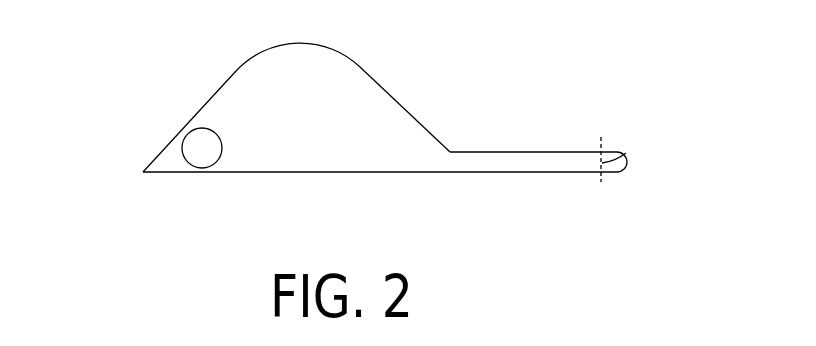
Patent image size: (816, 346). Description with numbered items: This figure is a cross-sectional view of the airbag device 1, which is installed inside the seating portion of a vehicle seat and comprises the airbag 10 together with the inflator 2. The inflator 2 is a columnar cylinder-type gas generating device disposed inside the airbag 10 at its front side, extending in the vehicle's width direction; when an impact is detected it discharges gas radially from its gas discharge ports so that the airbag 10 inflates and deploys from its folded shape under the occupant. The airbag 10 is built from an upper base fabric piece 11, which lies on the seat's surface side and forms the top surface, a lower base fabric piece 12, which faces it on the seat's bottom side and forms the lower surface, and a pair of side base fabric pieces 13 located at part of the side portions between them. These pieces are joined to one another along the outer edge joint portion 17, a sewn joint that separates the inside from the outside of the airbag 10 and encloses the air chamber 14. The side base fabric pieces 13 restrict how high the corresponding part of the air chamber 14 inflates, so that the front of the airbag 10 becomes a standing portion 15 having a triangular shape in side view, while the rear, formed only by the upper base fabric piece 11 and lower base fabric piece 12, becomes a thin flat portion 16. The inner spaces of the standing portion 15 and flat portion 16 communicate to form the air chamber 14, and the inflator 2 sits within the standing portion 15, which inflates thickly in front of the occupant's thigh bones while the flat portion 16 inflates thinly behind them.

The airbag device 1 is at (166, 90).
The inflator 2 is at (195, 148).
The airbag 10 is at (528, 148).
The upper base fabric piece 11 is at (373, 73).
The lower base fabric piece 12 is at (252, 175).
The side base fabric piece 13 is at (340, 133).
The air chamber 14 is at (245, 107).
The standing portion 15 is at (327, 198).
The flat portion 16 is at (540, 198).
The outer edge joint portion 17 is at (626, 154).